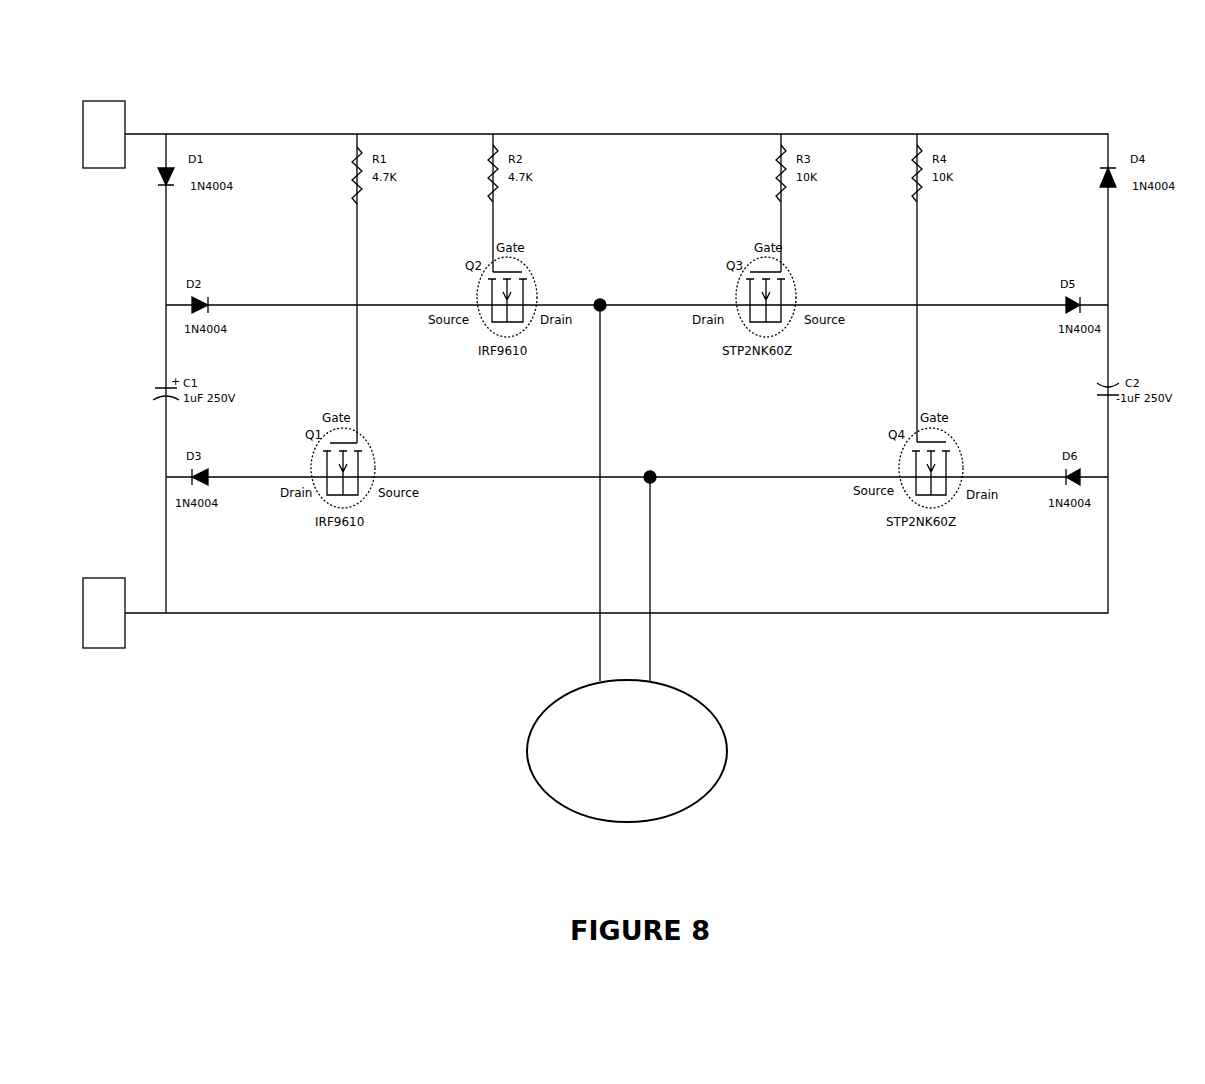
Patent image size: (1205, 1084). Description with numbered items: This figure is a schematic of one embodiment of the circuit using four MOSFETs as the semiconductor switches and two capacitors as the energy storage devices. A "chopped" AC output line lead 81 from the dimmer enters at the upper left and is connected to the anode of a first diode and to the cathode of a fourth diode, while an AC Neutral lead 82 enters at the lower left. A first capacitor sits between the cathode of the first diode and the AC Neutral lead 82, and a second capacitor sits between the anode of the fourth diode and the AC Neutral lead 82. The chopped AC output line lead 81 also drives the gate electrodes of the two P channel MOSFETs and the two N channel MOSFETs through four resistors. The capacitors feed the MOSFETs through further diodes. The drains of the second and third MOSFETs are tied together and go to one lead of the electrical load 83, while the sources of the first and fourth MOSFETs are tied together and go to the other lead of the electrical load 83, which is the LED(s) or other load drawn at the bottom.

The "chopped" AC output line lead 81 is at (104, 168).
The AC Neutral lead 82 is at (104, 648).
The electrical load 83 is at (727, 751).